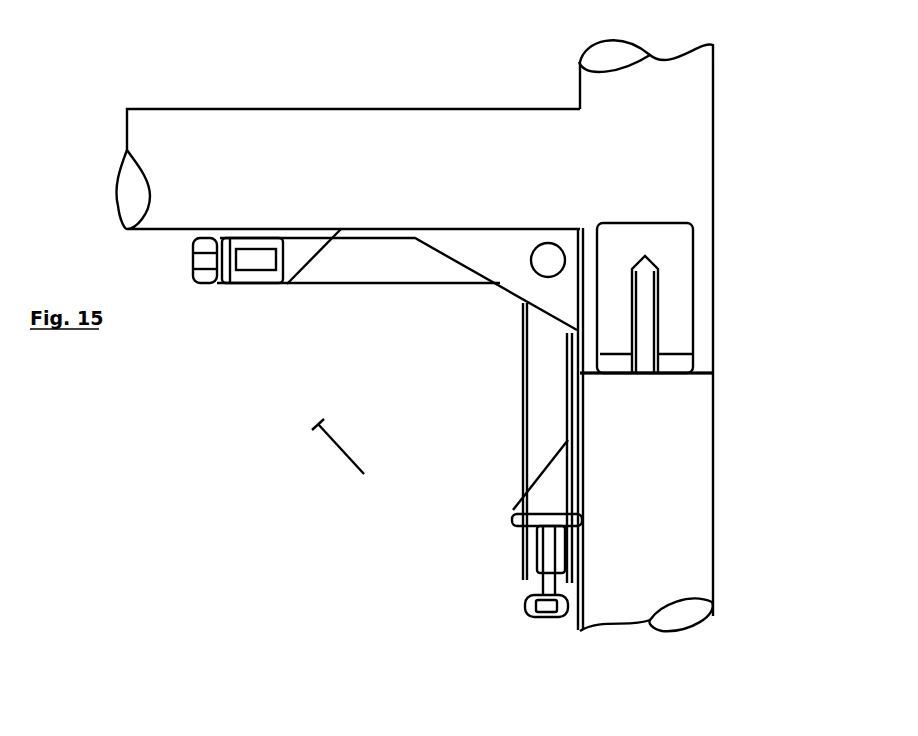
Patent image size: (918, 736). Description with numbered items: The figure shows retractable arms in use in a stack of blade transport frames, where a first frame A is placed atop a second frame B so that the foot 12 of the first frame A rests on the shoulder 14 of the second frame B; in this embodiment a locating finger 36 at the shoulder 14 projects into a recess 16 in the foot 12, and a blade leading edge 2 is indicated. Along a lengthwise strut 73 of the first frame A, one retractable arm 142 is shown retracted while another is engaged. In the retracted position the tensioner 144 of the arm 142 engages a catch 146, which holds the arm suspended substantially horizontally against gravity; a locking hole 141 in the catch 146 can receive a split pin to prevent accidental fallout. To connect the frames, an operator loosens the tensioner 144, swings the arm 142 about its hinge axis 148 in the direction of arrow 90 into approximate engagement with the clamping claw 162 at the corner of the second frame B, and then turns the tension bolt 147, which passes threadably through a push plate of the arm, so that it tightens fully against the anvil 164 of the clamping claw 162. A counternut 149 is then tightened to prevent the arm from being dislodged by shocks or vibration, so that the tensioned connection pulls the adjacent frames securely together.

The lengthwise strut 73 is at (340, 130).
The hinge axis 148 is at (548, 263).
The tension bolt 147 is at (208, 263).
The locking hole 141 is at (272, 297).
The catch 146 is at (293, 267).
The recess 16 is at (603, 345).
The locating finger 36 is at (655, 285).
The blade leading edge 2 is at (657, 362).
The shoulder 14 is at (700, 373).
The foot 12 is at (697, 378).
The retractable arm 142 is at (533, 378).
The clamping claw 162 is at (512, 512).
The anvil 164 is at (512, 520).
The counternut 149 is at (546, 585).
The tensioner 144 is at (538, 640).
The arrow 90 is at (342, 456).
The first frame A is at (686, 131).
The second frame B is at (687, 540).